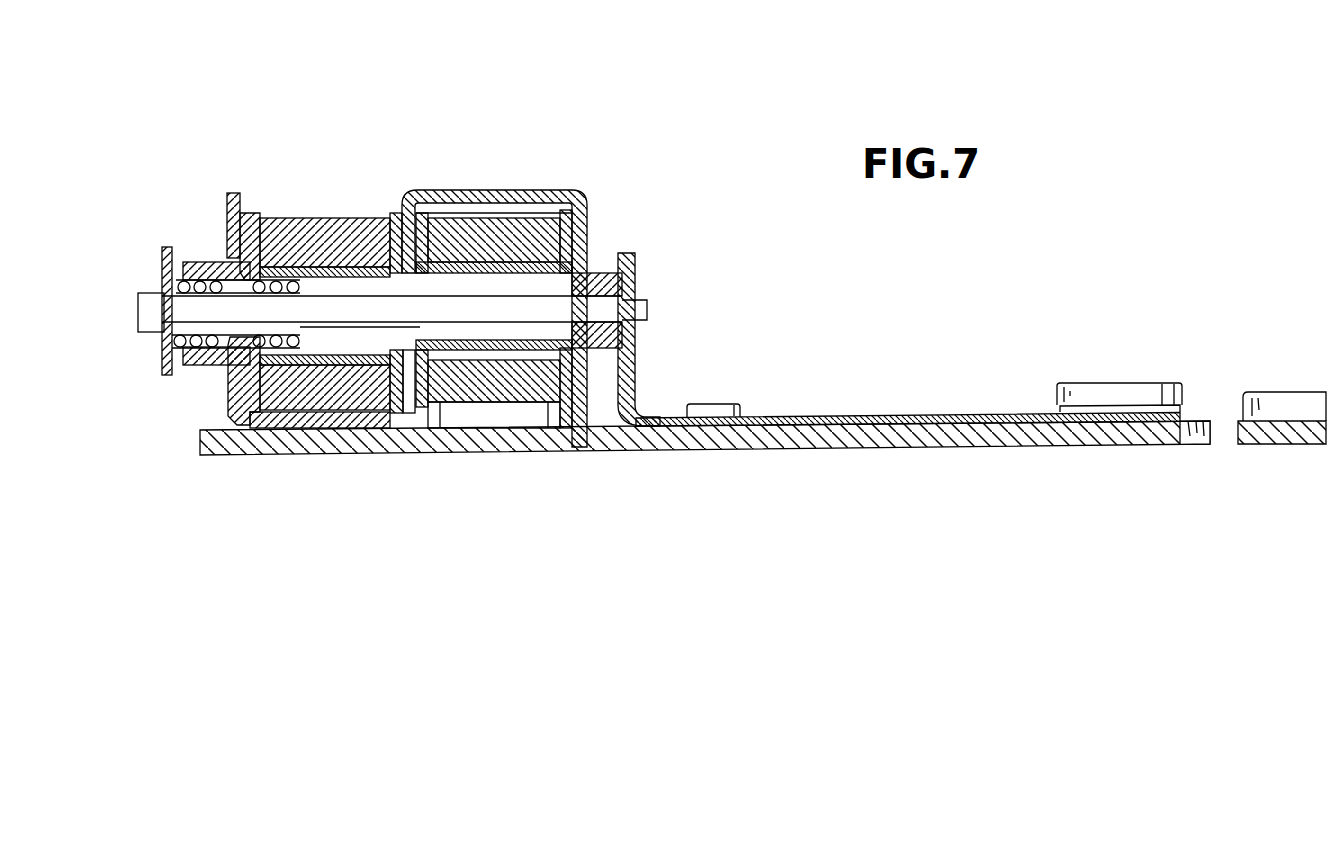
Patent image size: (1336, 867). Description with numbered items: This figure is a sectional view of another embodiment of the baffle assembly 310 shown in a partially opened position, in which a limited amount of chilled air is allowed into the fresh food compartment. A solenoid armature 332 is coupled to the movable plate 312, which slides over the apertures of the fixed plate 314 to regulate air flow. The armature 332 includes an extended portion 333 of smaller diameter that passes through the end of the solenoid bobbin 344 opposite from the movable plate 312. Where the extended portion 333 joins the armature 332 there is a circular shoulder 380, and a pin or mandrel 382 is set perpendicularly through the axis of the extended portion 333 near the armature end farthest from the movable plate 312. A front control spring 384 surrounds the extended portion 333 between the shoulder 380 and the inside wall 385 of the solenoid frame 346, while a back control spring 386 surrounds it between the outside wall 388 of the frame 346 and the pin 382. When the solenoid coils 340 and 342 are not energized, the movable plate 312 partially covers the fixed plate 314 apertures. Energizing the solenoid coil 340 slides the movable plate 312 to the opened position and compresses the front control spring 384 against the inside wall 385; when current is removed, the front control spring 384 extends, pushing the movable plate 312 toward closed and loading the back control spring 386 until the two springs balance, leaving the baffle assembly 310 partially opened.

The baffle assembly 310 is at (655, 156).
The movable plate 312 is at (942, 414).
The fixed plate 314 is at (958, 449).
The armature 332 is at (362, 294).
The extended portion 333 is at (140, 303).
The solenoid coil 340 is at (346, 386).
The solenoid coil 342 is at (489, 392).
The solenoid bobbin 344 is at (244, 412).
The solenoid frame 346 is at (498, 190).
The circular shoulder 380 is at (283, 430).
The pin or mandrel 382 is at (168, 380).
The front control spring 384 is at (272, 268).
The inside wall 385 is at (240, 200).
The back control spring 386 is at (186, 356).
The outside wall 388 is at (224, 213).